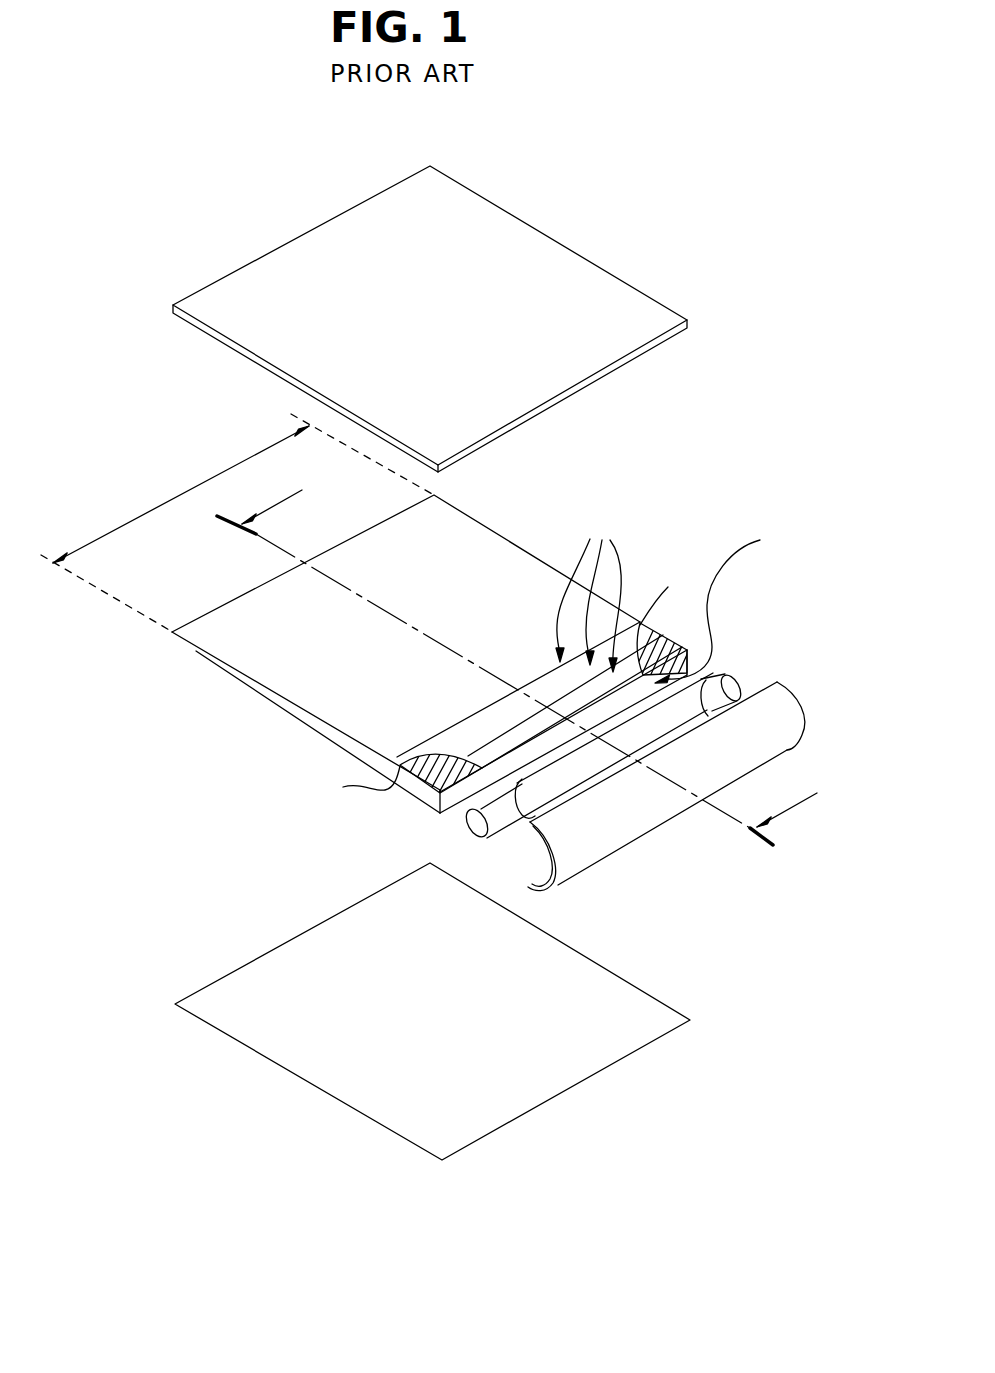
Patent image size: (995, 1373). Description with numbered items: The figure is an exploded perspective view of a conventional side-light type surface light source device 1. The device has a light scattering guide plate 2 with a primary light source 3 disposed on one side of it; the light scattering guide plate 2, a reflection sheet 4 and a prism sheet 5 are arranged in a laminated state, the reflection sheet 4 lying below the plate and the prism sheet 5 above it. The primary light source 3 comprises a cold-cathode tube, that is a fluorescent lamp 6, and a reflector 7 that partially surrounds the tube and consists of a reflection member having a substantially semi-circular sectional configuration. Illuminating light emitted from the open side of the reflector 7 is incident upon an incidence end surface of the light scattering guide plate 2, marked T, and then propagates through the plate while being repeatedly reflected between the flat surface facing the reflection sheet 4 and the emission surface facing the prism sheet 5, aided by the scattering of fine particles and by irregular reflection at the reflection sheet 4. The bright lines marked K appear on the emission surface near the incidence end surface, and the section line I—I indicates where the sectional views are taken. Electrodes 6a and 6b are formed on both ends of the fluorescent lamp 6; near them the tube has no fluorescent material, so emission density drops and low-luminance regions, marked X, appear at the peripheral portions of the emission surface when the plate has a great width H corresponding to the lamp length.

The side-light type surface light source device 1 is at (435, 749).
The light scattering guide plate 2 is at (213, 633).
The primary light source 3 is at (579, 737).
The reflection sheet 4 is at (487, 1128).
The prism sheet 5 is at (562, 382).
The cold-cathode tube (fluorescent lamp) 6 is at (567, 777).
The electrode 6a is at (718, 687).
The electrode 6b is at (468, 822).
The reflector 7 is at (667, 807).